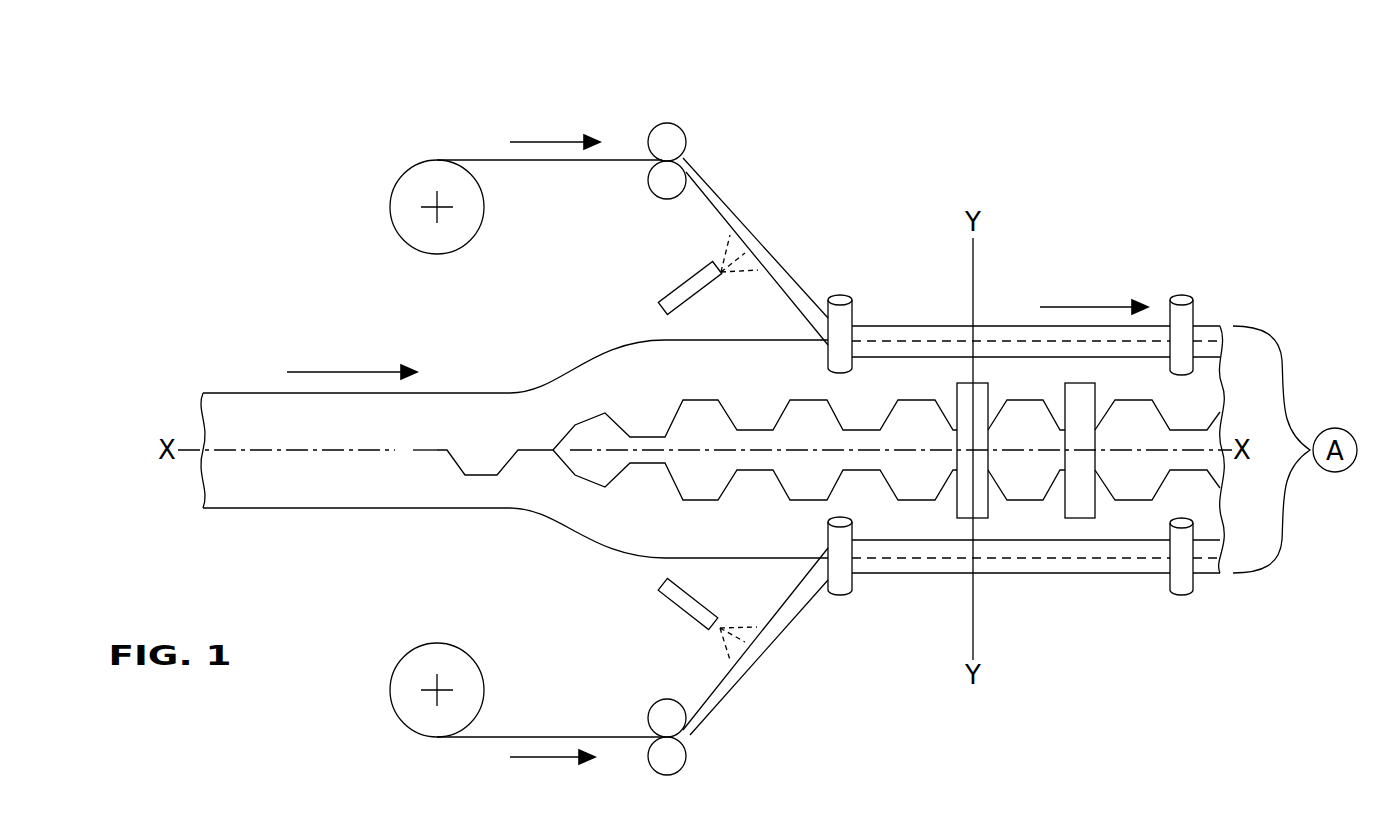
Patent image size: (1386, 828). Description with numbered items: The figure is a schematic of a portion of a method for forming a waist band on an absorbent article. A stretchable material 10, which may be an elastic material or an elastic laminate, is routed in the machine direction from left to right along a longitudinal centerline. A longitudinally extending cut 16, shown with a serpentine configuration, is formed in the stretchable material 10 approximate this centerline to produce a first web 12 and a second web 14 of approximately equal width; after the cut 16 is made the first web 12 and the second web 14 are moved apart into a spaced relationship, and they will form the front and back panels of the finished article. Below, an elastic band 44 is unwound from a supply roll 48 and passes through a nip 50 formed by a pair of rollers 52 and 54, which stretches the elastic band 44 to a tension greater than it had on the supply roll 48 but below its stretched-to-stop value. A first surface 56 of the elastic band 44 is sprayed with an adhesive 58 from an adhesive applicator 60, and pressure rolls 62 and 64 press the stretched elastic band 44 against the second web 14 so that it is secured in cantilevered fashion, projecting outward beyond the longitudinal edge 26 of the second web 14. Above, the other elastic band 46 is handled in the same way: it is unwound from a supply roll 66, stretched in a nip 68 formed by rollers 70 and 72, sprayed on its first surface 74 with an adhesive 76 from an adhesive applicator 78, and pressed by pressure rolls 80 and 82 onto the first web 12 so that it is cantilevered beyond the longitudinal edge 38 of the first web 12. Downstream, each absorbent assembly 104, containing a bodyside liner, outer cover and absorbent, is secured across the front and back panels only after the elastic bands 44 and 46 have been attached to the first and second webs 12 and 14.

The stretchable material 10 is at (242, 410).
The first web 12 is at (600, 372).
The second web 14 is at (640, 522).
The longitudinally extending cut 16 is at (438, 445).
The longitudinal edge 26 is at (1062, 560).
The longitudinal edge 38 is at (1010, 335).
The elastic band 44 is at (999, 566).
The elastic band 46 is at (925, 328).
The supply roll 48 is at (408, 662).
The nip 50 is at (688, 738).
The roller 52 is at (655, 710).
The roller 54 is at (678, 768).
The first surface 56 is at (712, 690).
The adhesive 58 is at (722, 645).
The adhesive applicator 60 is at (708, 610).
The pressure roll 62 is at (840, 597).
The pressure roll 64 is at (1185, 595).
The supply roll 66 is at (400, 182).
The nip 68 is at (682, 160).
The roller 70 is at (648, 188).
The roller 72 is at (683, 130).
The first surface 74 is at (700, 200).
The adhesive 76 is at (738, 270).
The adhesive applicator 78 is at (660, 308).
The pressure roll 80 is at (842, 292).
The pressure roll 82 is at (1183, 293).
The absorbent assembly 104 is at (1068, 400).